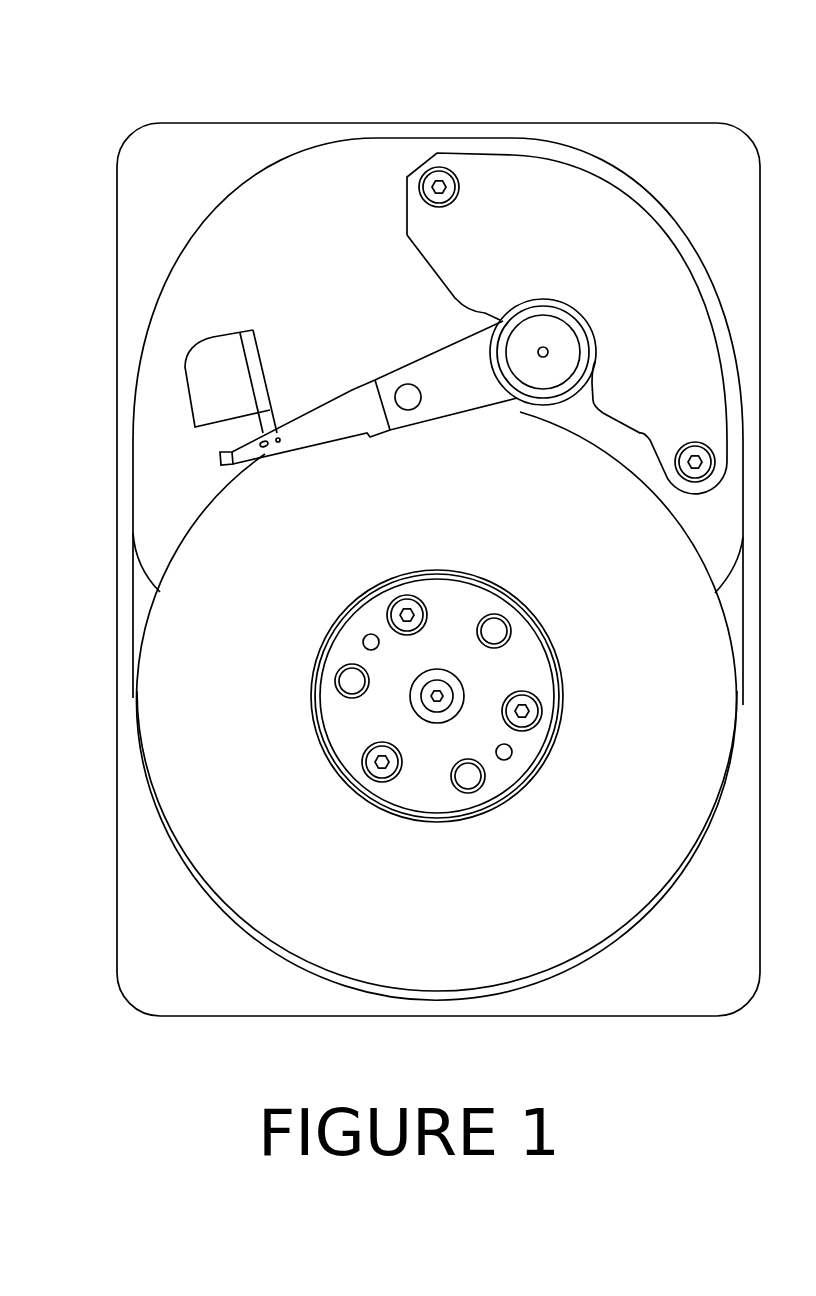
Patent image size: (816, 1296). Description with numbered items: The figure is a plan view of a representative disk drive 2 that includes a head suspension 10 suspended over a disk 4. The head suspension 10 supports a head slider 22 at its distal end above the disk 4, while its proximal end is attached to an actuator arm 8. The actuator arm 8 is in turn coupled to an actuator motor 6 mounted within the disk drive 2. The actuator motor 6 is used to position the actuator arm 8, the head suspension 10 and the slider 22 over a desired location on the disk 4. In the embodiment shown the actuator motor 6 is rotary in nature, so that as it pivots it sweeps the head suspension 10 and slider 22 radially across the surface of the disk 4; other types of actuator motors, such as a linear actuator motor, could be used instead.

The disk drive 2 is at (637, 83).
The disk 4 is at (585, 922).
The actuator motor 6 is at (557, 347).
The actuator arm 8 is at (450, 367).
The head suspension 10 is at (333, 430).
The head slider 22 is at (233, 447).